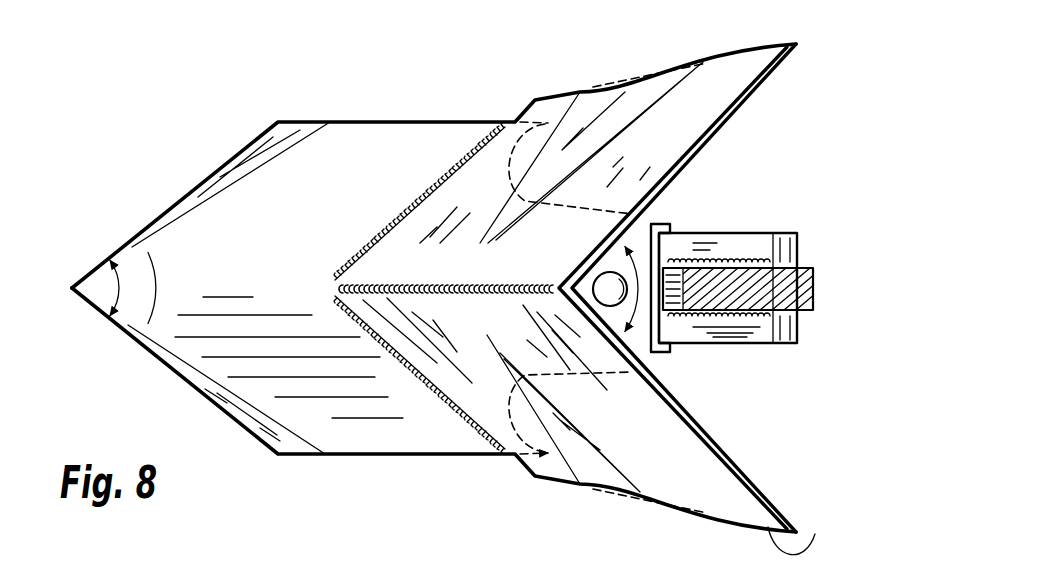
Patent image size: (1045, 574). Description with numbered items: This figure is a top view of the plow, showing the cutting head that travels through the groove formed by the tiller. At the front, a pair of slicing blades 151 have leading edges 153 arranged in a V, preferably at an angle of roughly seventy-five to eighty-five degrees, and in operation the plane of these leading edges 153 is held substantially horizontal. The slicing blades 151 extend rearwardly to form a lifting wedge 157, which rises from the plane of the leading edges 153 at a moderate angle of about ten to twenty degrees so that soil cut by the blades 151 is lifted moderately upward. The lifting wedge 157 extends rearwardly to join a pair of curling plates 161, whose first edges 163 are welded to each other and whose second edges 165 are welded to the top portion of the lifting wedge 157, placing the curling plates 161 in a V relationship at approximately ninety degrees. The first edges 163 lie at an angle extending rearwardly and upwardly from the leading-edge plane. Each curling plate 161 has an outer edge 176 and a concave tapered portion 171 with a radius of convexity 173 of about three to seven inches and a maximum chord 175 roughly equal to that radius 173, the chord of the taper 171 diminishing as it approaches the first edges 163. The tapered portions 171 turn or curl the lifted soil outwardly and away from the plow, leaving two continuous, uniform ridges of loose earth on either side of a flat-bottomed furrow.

The slicing blades 151 is at (270, 135).
The leading edges 153 is at (232, 161).
The lifting wedge 157 is at (378, 152).
The curling plates 161 is at (640, 178).
The first edges 163 is at (385, 287).
The second edges 165 is at (393, 223).
The concave tapered portion 171 is at (640, 112).
The radius of convexity 173 is at (637, 3).
The maximum chord 175 is at (622, 80).
The outer edge 176 is at (815, 534).